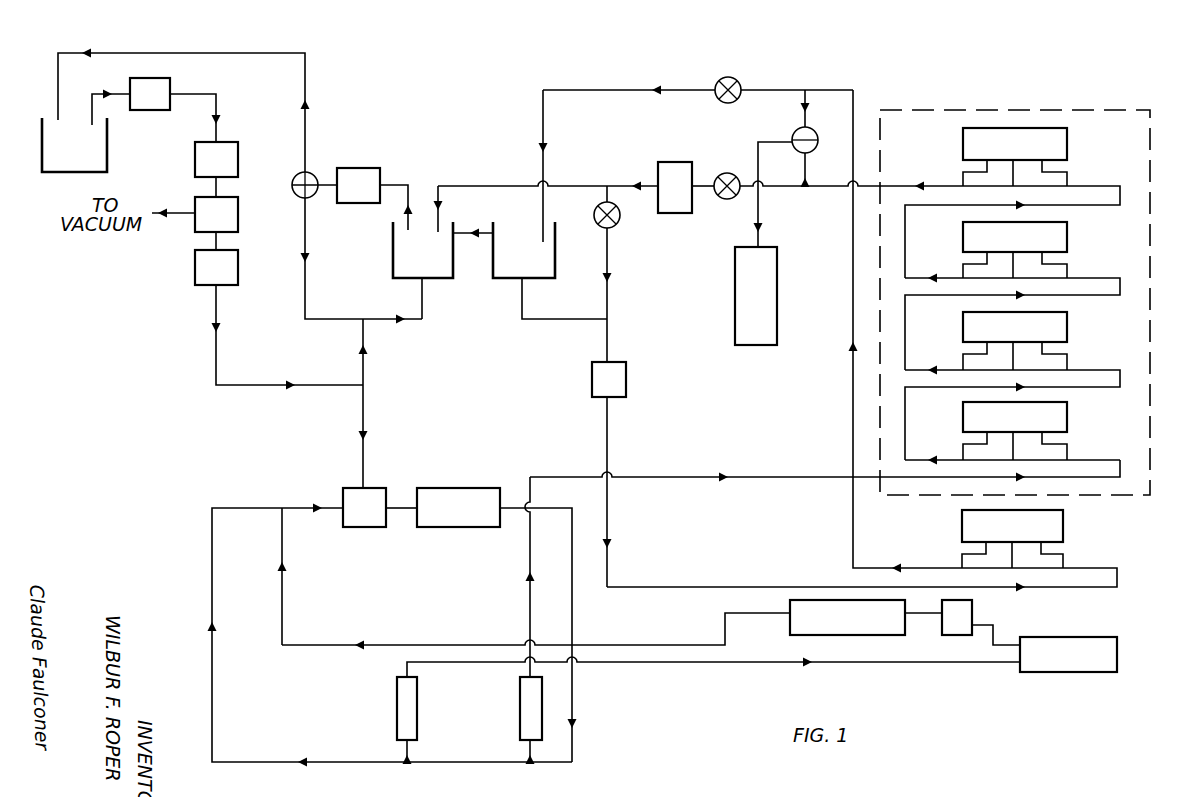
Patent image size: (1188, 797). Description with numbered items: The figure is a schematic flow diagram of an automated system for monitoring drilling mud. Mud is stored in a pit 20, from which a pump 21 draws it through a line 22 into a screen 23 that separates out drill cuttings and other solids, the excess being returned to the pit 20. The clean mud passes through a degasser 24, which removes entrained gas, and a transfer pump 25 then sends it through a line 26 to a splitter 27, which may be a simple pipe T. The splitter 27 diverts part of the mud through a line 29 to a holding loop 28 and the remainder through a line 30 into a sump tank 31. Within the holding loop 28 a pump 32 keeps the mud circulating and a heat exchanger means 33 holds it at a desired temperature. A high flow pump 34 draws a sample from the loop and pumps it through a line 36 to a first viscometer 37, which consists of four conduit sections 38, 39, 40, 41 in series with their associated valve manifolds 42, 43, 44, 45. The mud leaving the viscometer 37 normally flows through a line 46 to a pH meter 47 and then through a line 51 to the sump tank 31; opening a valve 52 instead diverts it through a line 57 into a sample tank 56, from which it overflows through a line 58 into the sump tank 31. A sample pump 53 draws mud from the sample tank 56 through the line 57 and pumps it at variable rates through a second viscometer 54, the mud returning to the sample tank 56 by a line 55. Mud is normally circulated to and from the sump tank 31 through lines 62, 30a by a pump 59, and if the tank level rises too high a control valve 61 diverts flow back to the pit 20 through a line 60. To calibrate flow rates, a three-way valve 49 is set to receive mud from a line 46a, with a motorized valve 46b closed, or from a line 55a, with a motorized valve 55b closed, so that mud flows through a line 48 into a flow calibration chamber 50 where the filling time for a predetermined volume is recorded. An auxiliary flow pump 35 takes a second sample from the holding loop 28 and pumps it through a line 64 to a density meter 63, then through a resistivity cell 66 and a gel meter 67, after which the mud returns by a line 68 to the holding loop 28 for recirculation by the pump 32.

The pit 20 is at (58, 130).
The pump 21 is at (148, 85).
The line 22 is at (212, 128).
The screen 23 is at (228, 163).
The degasser 24 is at (228, 216).
The transfer pump 25 is at (228, 270).
The line 26 is at (214, 350).
The splitter 27 is at (366, 386).
The holding loop 28 is at (238, 582).
The line 29 is at (366, 455).
The line 30 is at (366, 374).
The line 30a is at (383, 325).
The sump tank 31 is at (415, 240).
The pump 32 is at (365, 495).
The heat exchanger means 33 is at (448, 495).
The high flow pump 34 is at (528, 708).
The auxiliary flow pump 35 is at (408, 703).
The line 36 is at (637, 475).
The viscometer 37 is at (1135, 265).
The conduit section 38 is at (1030, 460).
The conduit section 39 is at (1030, 370).
The conduit section 40 is at (1030, 278).
The conduit section 41 is at (1030, 186).
The valve manifold 42 is at (1050, 417).
The valve manifold 43 is at (1050, 327).
The valve manifold 44 is at (1050, 237).
The valve manifold 45 is at (1050, 143).
The line 46 is at (863, 185).
The line 46a is at (807, 172).
The motorized valve 46b is at (730, 199).
The pH meter 47 is at (668, 168).
The line 48 is at (755, 165).
The three-way valve 49 is at (817, 140).
The flow calibration chamber 50 is at (750, 275).
The line 51 is at (620, 184).
The valve 52 is at (618, 222).
The sample pump 53 is at (614, 378).
The second viscometer 54 is at (1095, 545).
The line 55 is at (851, 352).
The line 55a is at (806, 128).
The motorized valve 55b is at (732, 78).
The sample tank 56 is at (505, 265).
The line 57 is at (562, 322).
The line 58 is at (468, 230).
The pump 59 is at (350, 180).
The line 60 is at (236, 60).
The control valve 61 is at (312, 175).
The line 62 is at (303, 272).
The density meter 63 is at (1065, 655).
The line 64 is at (905, 664).
The resistivity cell 66 is at (958, 615).
The gel meter 67 is at (848, 618).
The conduit 68 is at (705, 620).